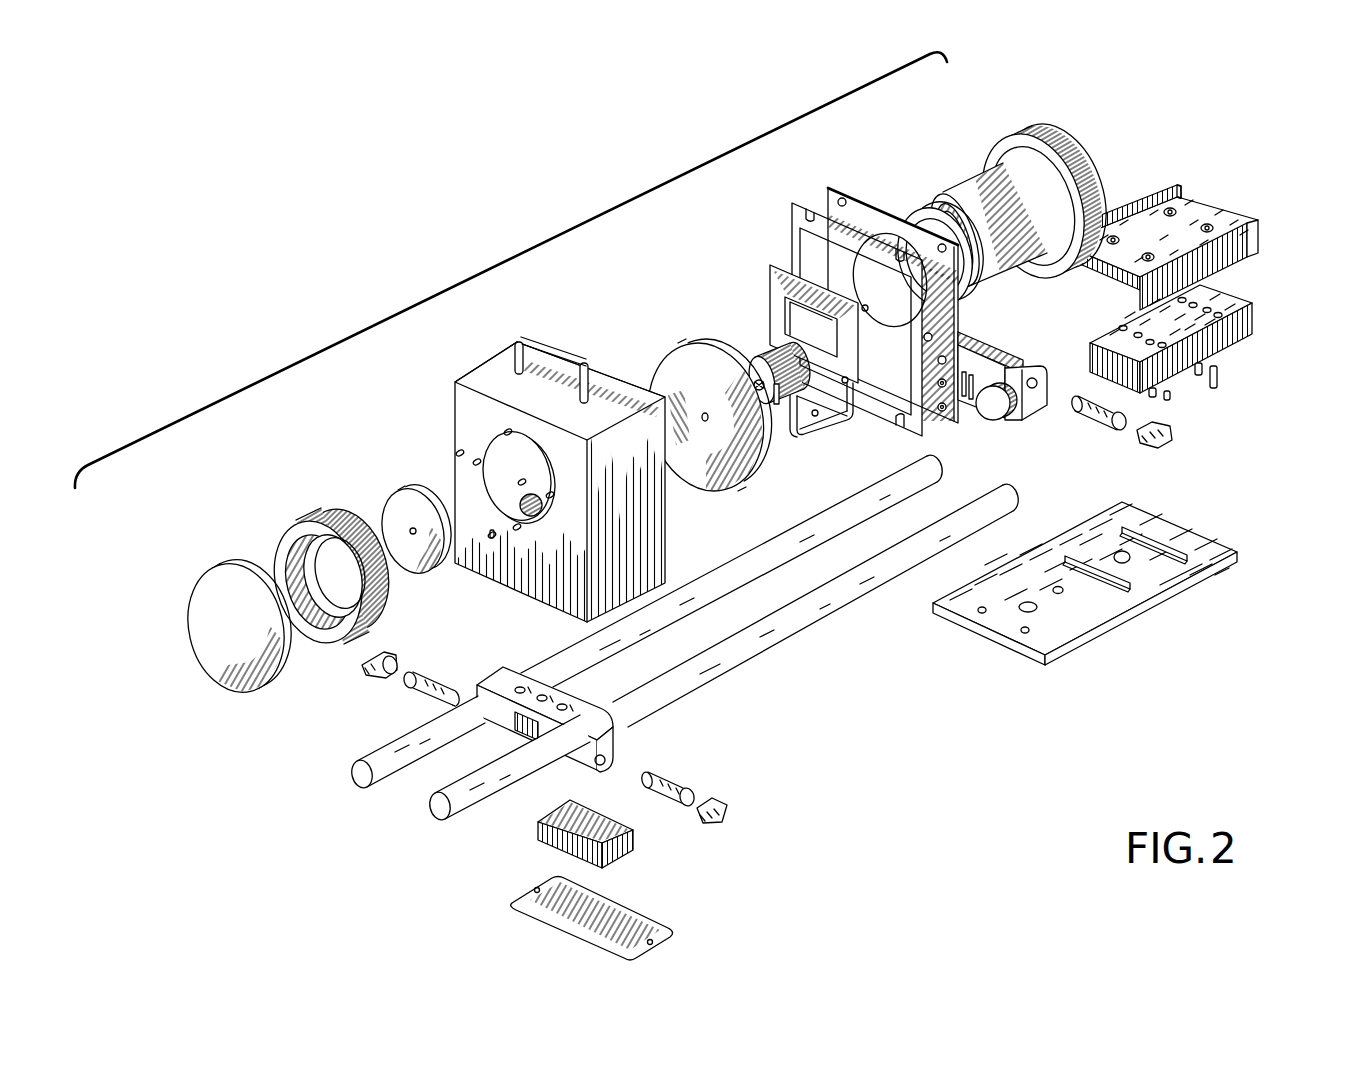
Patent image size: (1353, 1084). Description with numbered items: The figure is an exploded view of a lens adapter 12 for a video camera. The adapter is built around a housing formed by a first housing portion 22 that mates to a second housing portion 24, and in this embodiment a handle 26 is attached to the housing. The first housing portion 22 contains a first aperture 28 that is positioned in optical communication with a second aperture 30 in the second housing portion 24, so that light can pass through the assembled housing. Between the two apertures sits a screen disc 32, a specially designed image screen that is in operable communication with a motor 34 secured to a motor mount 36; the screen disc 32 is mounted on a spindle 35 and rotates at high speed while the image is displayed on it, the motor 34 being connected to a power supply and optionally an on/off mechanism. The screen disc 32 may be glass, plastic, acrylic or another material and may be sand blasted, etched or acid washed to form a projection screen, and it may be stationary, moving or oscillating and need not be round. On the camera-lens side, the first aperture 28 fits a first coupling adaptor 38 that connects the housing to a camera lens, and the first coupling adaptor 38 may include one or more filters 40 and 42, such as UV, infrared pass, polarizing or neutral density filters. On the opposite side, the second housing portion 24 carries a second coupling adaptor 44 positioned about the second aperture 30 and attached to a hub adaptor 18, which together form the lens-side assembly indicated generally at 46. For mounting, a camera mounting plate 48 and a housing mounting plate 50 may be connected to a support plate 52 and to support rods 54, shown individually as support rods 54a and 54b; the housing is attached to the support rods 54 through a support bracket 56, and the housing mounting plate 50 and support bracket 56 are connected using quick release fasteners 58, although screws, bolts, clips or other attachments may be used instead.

The lens adapter 12 is at (503, 257).
The hub adaptor 18 is at (1010, 136).
The first housing portion 22 is at (502, 365).
The second housing portion 24 is at (828, 187).
The handle 26 is at (518, 341).
The first aperture 28 is at (503, 455).
The second aperture 30 is at (887, 213).
The screen disc 32 is at (656, 360).
The motor 34 is at (780, 348).
The spindle 35 is at (762, 392).
The motor mount 36 is at (830, 437).
The first coupling adaptor 38 is at (300, 525).
The filter 40 is at (390, 495).
The filter 42 is at (200, 585).
The second coupling adaptor 44 is at (912, 217).
The lens mount assembly 46 is at (1117, 128).
The camera mounting plate 48 is at (1280, 202).
The housing mounting plate 50 is at (1040, 372).
The support plate 52 is at (1168, 598).
The support rods 54 is at (656, 662).
The support rod 54a is at (392, 742).
The support rod 54b is at (724, 673).
The support bracket 56 is at (598, 735).
The quick release fasteners 58 is at (470, 680).